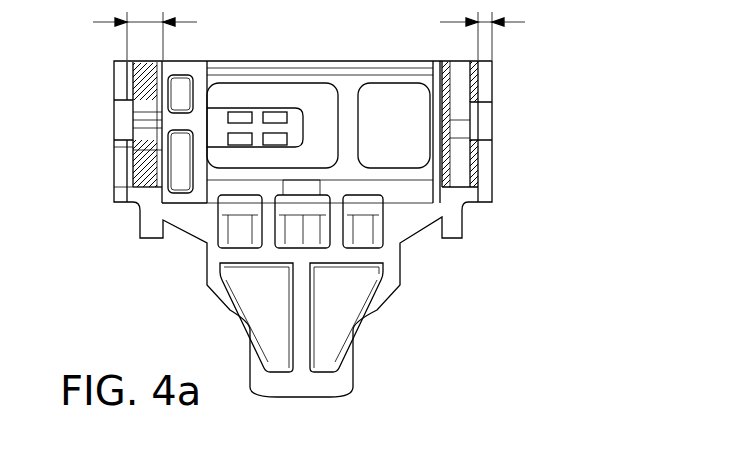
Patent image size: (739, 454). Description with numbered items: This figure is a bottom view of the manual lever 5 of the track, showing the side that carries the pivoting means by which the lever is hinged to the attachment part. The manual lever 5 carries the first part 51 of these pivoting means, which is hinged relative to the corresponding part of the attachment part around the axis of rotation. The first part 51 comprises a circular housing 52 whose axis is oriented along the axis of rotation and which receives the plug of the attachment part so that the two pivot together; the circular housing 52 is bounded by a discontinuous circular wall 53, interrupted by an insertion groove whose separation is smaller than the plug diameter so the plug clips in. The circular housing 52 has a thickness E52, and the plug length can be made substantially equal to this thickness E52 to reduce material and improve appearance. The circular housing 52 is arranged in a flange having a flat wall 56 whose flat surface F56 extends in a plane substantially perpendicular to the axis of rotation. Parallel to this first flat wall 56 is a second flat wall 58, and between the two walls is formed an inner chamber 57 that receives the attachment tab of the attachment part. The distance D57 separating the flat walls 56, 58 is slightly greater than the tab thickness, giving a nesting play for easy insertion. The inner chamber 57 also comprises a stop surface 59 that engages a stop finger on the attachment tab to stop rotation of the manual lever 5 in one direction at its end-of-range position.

The manual lever 5 is at (390, 328).
The first part 51 is at (502, 183).
The circular housing 52 is at (500, 128).
The discontinuous circular wall 53 is at (480, 113).
The flat wall 56 is at (100, 205).
The inner chamber 57 is at (133, 115).
The second flat wall 58 is at (172, 53).
The stop surface 59 is at (133, 143).
The distance separating the two flat walls D57 is at (119, 34).
The thickness of the circular housing E52 is at (509, 34).
The flat surface F56 is at (128, 187).